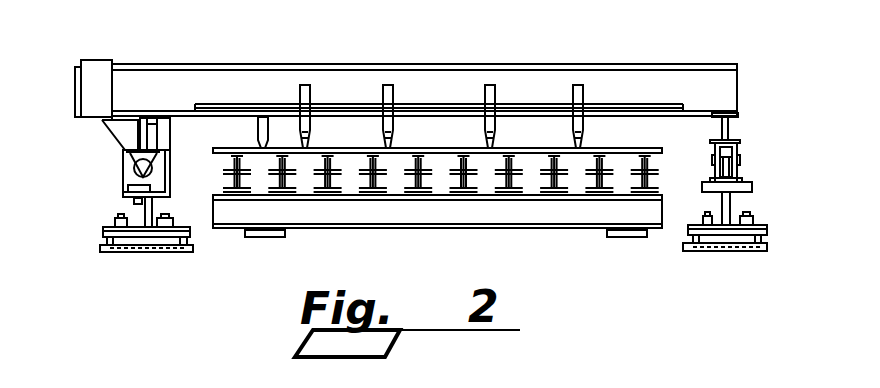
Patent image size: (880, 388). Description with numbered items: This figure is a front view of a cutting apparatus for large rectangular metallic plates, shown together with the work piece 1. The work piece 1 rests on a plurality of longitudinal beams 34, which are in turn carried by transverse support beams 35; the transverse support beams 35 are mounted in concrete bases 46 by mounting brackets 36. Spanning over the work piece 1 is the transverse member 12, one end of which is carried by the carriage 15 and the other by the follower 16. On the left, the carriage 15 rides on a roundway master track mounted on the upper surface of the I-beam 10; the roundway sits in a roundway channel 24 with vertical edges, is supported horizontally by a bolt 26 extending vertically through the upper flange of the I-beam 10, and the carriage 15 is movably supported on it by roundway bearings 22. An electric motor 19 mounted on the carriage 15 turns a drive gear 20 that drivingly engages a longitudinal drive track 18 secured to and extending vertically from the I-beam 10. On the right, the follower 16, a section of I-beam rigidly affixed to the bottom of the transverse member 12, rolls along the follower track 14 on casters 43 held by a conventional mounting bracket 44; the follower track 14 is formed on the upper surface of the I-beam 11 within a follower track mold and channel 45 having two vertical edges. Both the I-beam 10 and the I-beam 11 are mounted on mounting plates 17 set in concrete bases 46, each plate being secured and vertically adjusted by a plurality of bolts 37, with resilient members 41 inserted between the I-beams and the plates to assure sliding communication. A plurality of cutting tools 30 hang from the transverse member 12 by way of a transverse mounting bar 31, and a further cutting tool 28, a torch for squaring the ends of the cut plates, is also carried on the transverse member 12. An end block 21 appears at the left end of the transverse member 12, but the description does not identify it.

The work piece 1 is at (650, 148).
The I-beam 10 is at (132, 244).
The I-beam 11 is at (722, 207).
The transverse member 12 is at (150, 76).
The follower track 14 is at (712, 178).
The carriage 15 is at (122, 129).
The follower 16 is at (737, 127).
The mounting plates 17 is at (188, 233).
The longitudinal drive track 18 is at (170, 178).
The electric motor 19 is at (160, 134).
The drive gear 20 is at (162, 163).
The end block 21 is at (95, 62).
The roundway bearings 22 is at (128, 160).
The roundway channel 24 is at (130, 190).
The bolt 26 is at (137, 202).
The cutting tool 28 is at (268, 126).
The cutting tools 30 is at (383, 88).
The transverse mounting bar 31 is at (436, 104).
The longitudinal beams 34 is at (375, 180).
The transverse support beams 35 is at (462, 210).
The mounting brackets 36 is at (262, 230).
The bolts 37 is at (103, 230).
The resilient members 41 is at (133, 238).
The casters 43 is at (737, 160).
The mounting bracket 44 is at (718, 152).
The follower track mold and channel 45 is at (742, 182).
The concrete bases 46 is at (272, 240).